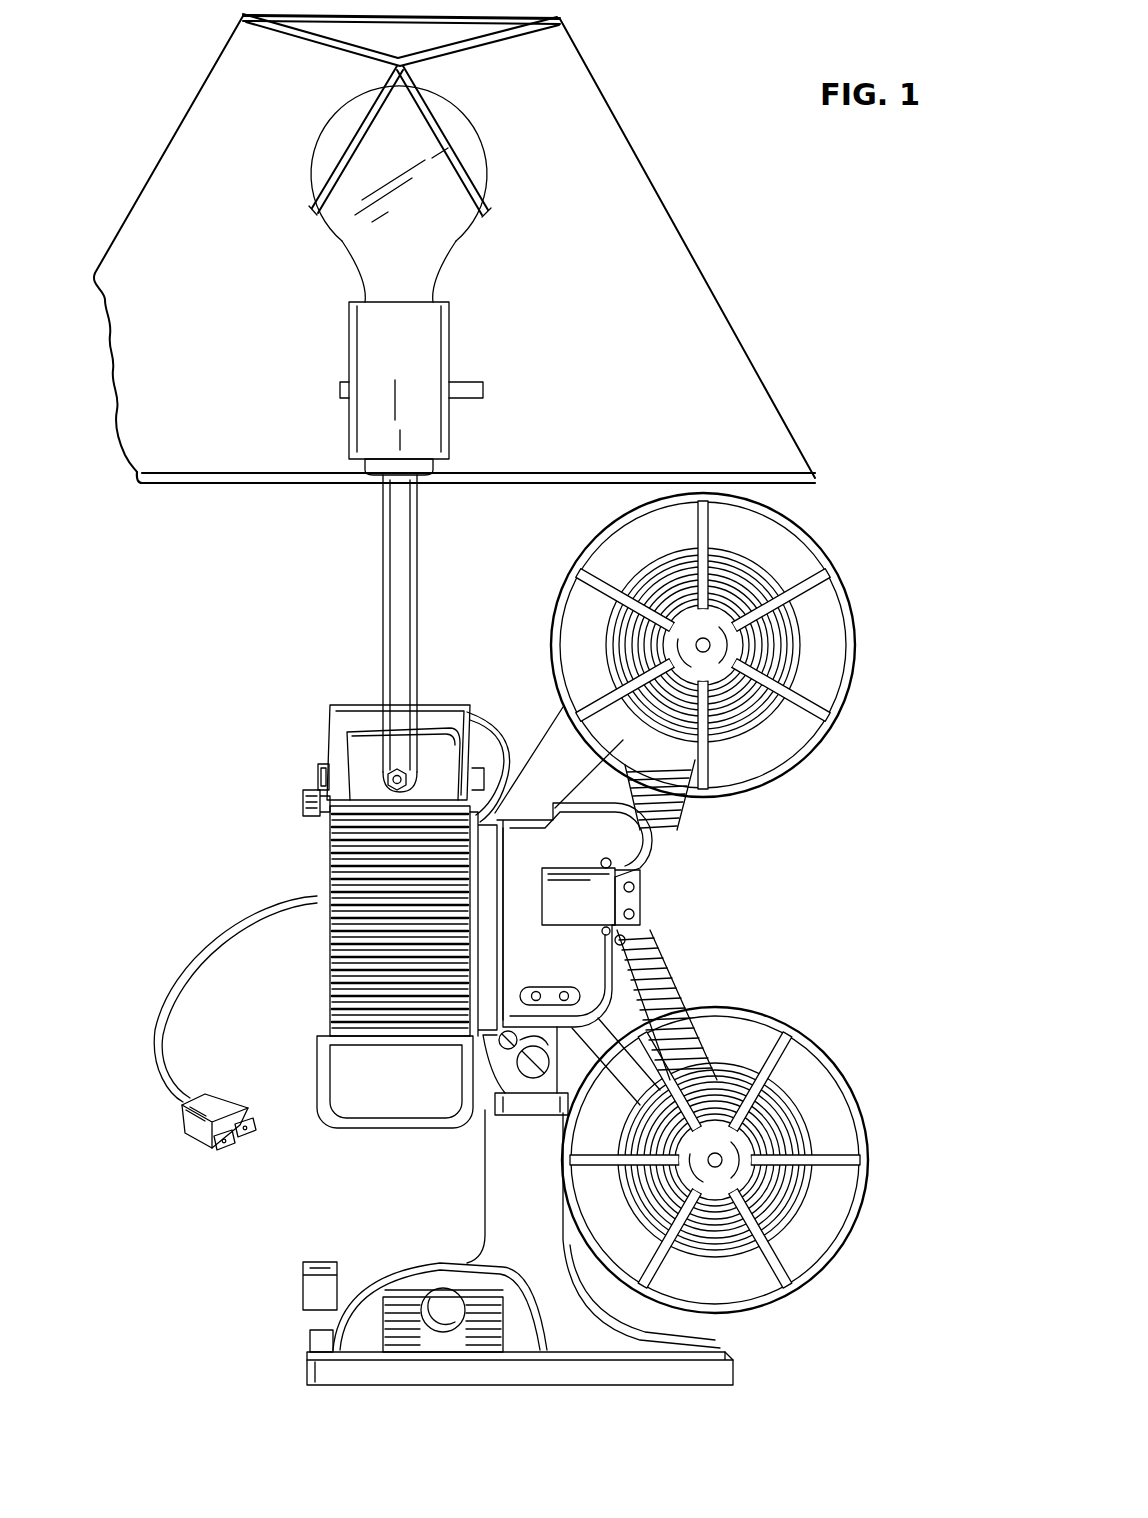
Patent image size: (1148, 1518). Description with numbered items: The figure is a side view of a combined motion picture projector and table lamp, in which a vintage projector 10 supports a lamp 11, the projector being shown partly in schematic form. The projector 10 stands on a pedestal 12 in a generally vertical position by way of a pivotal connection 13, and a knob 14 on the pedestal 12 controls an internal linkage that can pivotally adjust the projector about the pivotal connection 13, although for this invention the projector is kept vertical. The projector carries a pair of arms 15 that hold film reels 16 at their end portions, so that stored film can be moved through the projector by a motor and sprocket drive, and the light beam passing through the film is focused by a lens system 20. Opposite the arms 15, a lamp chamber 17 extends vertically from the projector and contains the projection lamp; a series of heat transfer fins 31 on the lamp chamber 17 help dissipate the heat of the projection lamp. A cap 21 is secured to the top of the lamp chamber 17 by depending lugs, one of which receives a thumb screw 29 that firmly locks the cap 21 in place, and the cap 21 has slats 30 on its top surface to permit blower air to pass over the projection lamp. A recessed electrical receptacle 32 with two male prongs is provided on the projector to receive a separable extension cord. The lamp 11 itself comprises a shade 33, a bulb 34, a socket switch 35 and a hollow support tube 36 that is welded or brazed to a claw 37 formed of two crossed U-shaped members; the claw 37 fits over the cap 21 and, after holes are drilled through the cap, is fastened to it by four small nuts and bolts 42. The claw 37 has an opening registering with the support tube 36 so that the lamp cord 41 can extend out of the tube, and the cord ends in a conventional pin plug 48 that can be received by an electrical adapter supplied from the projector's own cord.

The projector 10 is at (782, 883).
The lamp 11 is at (750, 253).
The pedestal 12 is at (733, 1352).
The pivotal connection 13 is at (533, 1080).
The knob 14 is at (445, 1288).
The arms 15 is at (672, 838).
The film reels 16 is at (566, 570).
The lamp chamber 17 is at (330, 950).
The lens system 20 is at (607, 896).
The cap 21 is at (388, 776).
The thumb screw 29 is at (305, 810).
The slats 30 is at (375, 725).
The heat transfer fins 31 is at (340, 1020).
The recessed electrical receptacle 32 is at (568, 984).
The shade 33 is at (790, 432).
The bulb 34 is at (489, 152).
The socket switch 35 is at (449, 346).
The hollow support tube 36 is at (383, 592).
The claw 37 is at (427, 684).
The lamp cord 41 is at (192, 952).
The nuts and bolts 42 is at (318, 772).
The pin plug 48 is at (200, 1150).